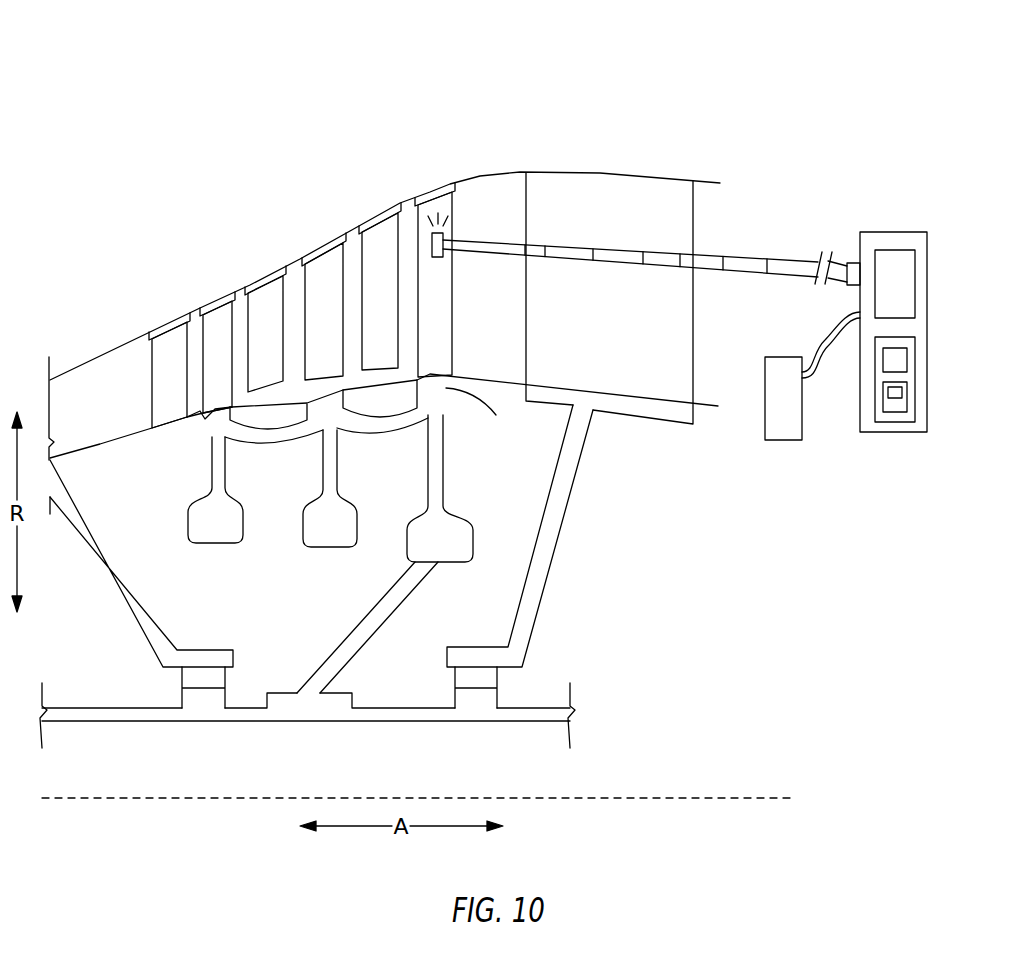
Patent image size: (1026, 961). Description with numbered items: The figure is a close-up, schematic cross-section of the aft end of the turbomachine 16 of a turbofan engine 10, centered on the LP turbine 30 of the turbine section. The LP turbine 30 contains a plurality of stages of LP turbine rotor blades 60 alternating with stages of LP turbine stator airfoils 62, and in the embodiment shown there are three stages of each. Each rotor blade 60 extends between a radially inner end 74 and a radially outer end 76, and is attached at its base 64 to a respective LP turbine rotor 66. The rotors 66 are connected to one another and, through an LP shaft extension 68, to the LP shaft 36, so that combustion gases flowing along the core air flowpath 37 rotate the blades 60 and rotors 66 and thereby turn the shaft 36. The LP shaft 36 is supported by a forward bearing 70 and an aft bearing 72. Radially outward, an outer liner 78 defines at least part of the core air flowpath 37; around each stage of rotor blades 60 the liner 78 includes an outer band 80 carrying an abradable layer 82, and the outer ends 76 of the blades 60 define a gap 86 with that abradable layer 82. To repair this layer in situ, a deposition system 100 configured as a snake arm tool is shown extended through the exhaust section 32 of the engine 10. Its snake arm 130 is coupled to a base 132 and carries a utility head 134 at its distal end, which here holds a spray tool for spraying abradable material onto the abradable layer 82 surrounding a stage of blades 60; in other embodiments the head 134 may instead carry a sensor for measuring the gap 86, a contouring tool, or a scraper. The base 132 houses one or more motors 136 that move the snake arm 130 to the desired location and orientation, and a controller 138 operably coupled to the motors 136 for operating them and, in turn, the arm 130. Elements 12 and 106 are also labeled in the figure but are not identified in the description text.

The turbofan engine 10 is at (433, 78).
The engine centerline axis 12 is at (618, 797).
The turbomachine 16 is at (340, 68).
The LP turbine 30 is at (292, 196).
The exhaust section 32 is at (660, 242).
The LP shaft 36 is at (102, 708).
The core air flowpath 37 is at (80, 385).
The LP turbine rotor blades 60 is at (217, 318).
The LP turbine stator airfoils 62 is at (270, 283).
The base 64 is at (218, 418).
The LP turbine rotor 66 is at (218, 485).
The LP shaft extension 68 is at (370, 610).
The forward bearing 70 is at (228, 688).
The aft bearing 72 is at (497, 684).
The radially inner end 74 is at (440, 368).
The radially outer end 76 is at (192, 328).
The outer liner 78 is at (241, 283).
The outer band 80 is at (433, 168).
The abradable layer 82 is at (303, 250).
The gap 86 is at (470, 190).
The deposition system 100 is at (846, 280).
The sensor 106 is at (467, 222).
The snake arm 130 is at (610, 242).
The base 132 is at (922, 232).
The utility head 134 is at (444, 268).
The motors 136 is at (873, 262).
The controller 138 is at (873, 380).